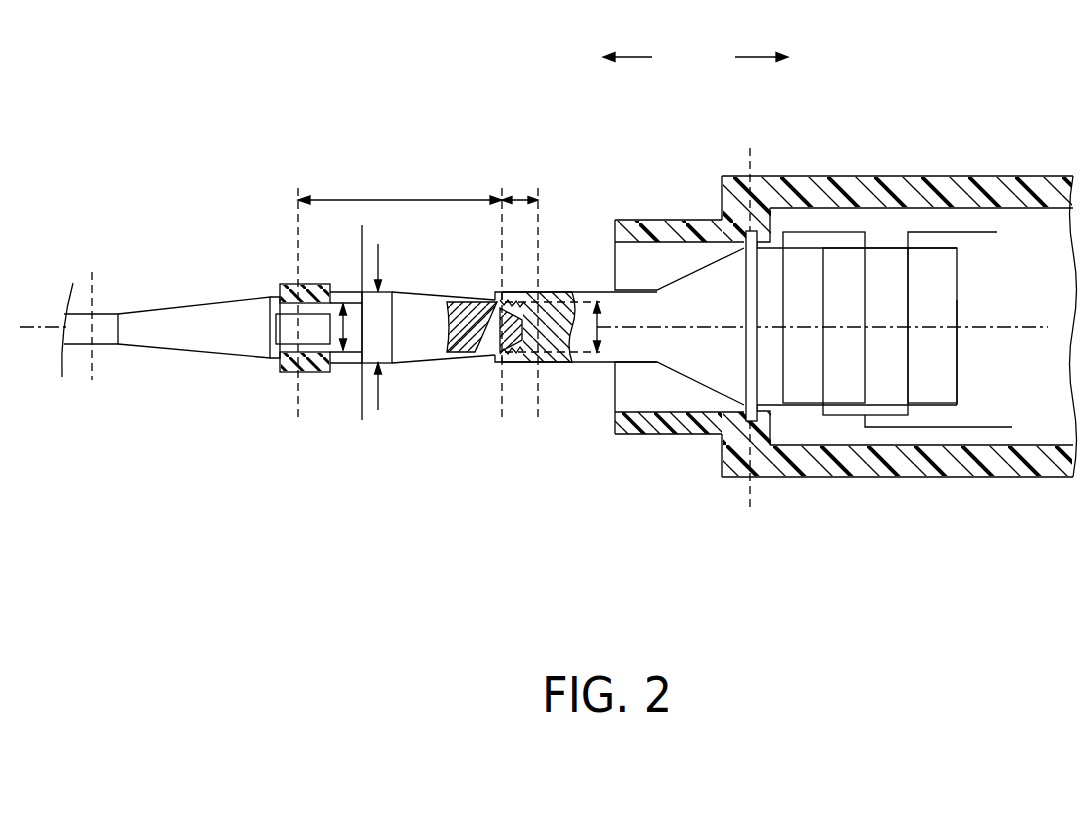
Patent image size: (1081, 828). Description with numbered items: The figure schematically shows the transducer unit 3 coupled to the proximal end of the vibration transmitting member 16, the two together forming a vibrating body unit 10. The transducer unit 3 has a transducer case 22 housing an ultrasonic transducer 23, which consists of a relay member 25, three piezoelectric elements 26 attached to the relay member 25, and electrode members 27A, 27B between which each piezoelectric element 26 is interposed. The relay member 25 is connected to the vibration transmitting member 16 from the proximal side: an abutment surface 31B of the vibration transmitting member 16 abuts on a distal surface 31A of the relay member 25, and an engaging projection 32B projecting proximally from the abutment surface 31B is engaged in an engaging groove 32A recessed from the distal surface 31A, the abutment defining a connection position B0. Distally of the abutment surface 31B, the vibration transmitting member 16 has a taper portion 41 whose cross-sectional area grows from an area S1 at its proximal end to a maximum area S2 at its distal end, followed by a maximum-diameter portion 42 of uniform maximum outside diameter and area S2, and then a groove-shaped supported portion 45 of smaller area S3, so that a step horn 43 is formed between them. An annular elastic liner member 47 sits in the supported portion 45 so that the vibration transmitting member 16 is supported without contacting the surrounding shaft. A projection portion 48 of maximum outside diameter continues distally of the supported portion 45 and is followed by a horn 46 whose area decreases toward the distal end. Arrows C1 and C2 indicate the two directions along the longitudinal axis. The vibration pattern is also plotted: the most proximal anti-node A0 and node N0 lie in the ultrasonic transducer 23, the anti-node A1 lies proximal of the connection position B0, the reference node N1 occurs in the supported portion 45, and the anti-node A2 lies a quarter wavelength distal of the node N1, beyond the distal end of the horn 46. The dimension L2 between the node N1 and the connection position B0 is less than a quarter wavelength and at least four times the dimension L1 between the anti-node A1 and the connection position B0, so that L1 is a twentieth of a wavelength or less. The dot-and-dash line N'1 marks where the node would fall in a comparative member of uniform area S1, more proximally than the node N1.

The transducer unit 3 is at (960, 148).
The vibrating body unit 10 is at (432, 508).
The vibration transmitting member 16 is at (436, 363).
The transducer case 22 is at (855, 176).
The ultrasonic transducer 23 is at (704, 358).
The relay member 25 is at (686, 305).
The piezoelectric elements 26 is at (887, 393).
The electrode member 27A is at (960, 428).
The electrode member 27B is at (985, 233).
The distal surface 31A is at (497, 293).
The abutment surface 31B is at (521, 363).
The engaging groove 32A is at (486, 353).
The engaging projection 32B is at (545, 365).
The taper portion 41 is at (418, 300).
The maximum-diameter portion 42 is at (385, 363).
The step horn 43 is at (312, 284).
The supported portion 45 is at (312, 335).
The horn 46 is at (198, 343).
The liner member 47 is at (288, 284).
The projection portion 48 is at (275, 291).
The vibration anti-node A0 is at (957, 380).
The vibration anti-node A1 is at (538, 422).
The vibration anti-node A2 is at (92, 382).
The connection position B0 is at (502, 422).
The direction C1 is at (629, 42).
The direction C2 is at (761, 42).
The dimension L1 is at (520, 186).
The dimension L2 is at (400, 186).
The vibration node N0 is at (750, 158).
The vibration node N1 is at (298, 422).
The vibration node N'1 is at (352, 359).
The cross-sectional area S1 is at (600, 301).
The maximum cross-sectional area S2 is at (378, 312).
The cross-sectional area S3 is at (344, 303).